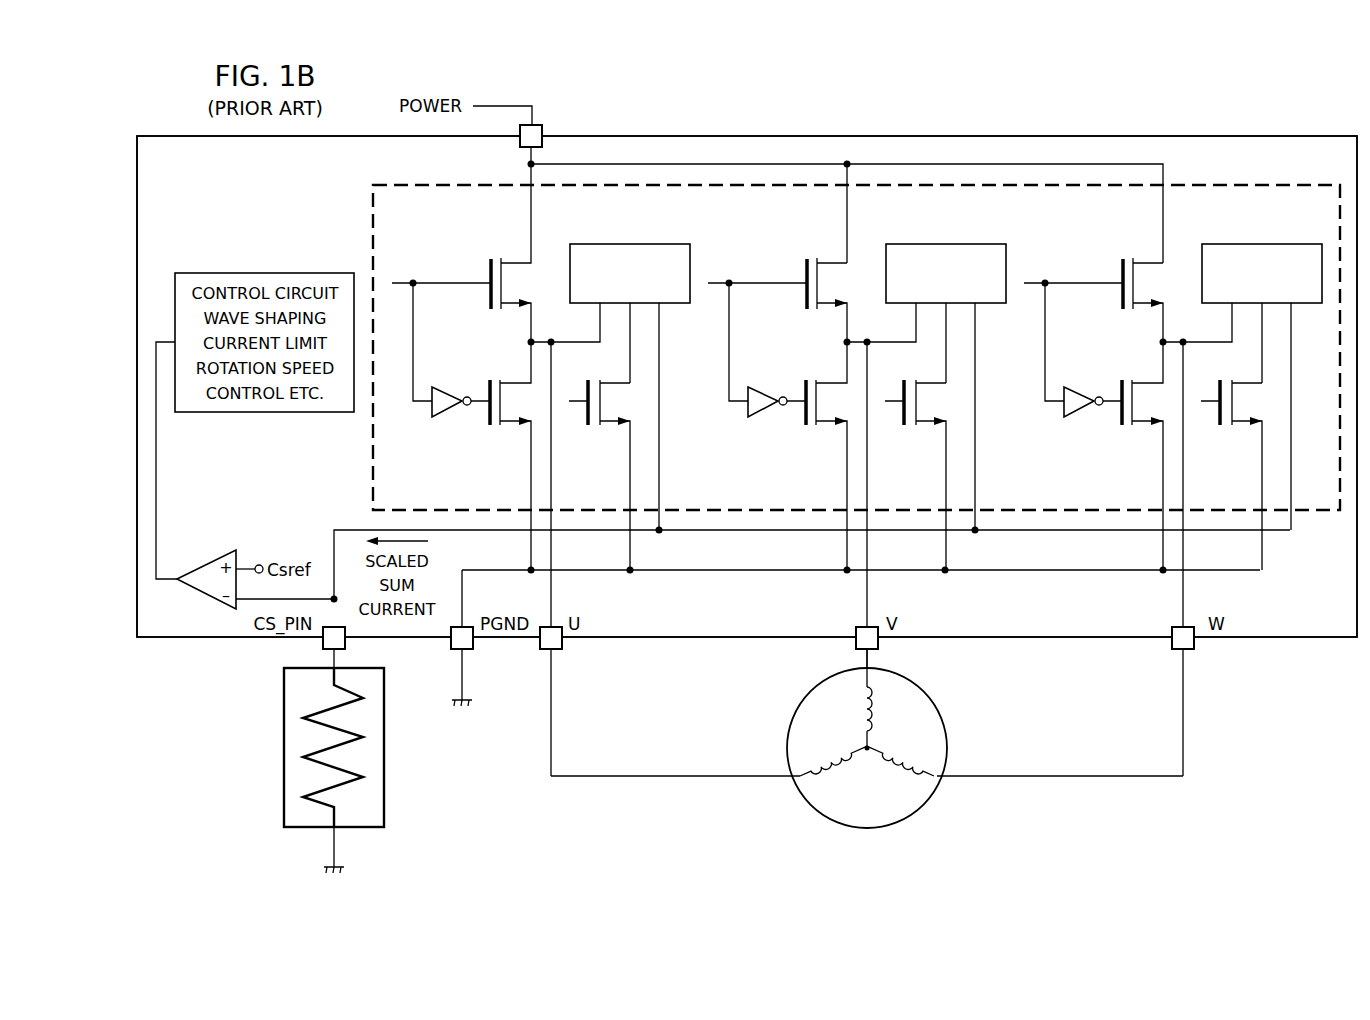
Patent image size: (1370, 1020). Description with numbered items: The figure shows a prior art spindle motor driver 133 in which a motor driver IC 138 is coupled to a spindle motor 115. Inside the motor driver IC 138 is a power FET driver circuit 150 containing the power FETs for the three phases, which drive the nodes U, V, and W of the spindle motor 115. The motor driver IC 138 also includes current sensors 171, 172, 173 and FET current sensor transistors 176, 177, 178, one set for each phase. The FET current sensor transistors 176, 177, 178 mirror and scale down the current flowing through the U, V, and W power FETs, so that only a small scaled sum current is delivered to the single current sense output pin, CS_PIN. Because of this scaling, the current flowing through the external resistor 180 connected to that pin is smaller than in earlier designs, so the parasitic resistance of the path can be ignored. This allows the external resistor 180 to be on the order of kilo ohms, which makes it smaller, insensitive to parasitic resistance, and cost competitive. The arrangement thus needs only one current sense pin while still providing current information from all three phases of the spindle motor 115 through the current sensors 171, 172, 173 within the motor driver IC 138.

The spindle motor driver 133 is at (980, 108).
The motor driver IC 138 is at (283, 241).
The power FET driver circuit 150 is at (364, 453).
The current sensor 171 is at (620, 243).
The current sensor 172 is at (946, 361).
The current sensor 173 is at (1262, 361).
The FET current sensor transistor 176 is at (586, 428).
The FET current sensor transistor 177 is at (914, 475).
The FET current sensor transistor 178 is at (1230, 475).
The external resistor 180 is at (284, 748).
The spindle motor 115 is at (940, 795).